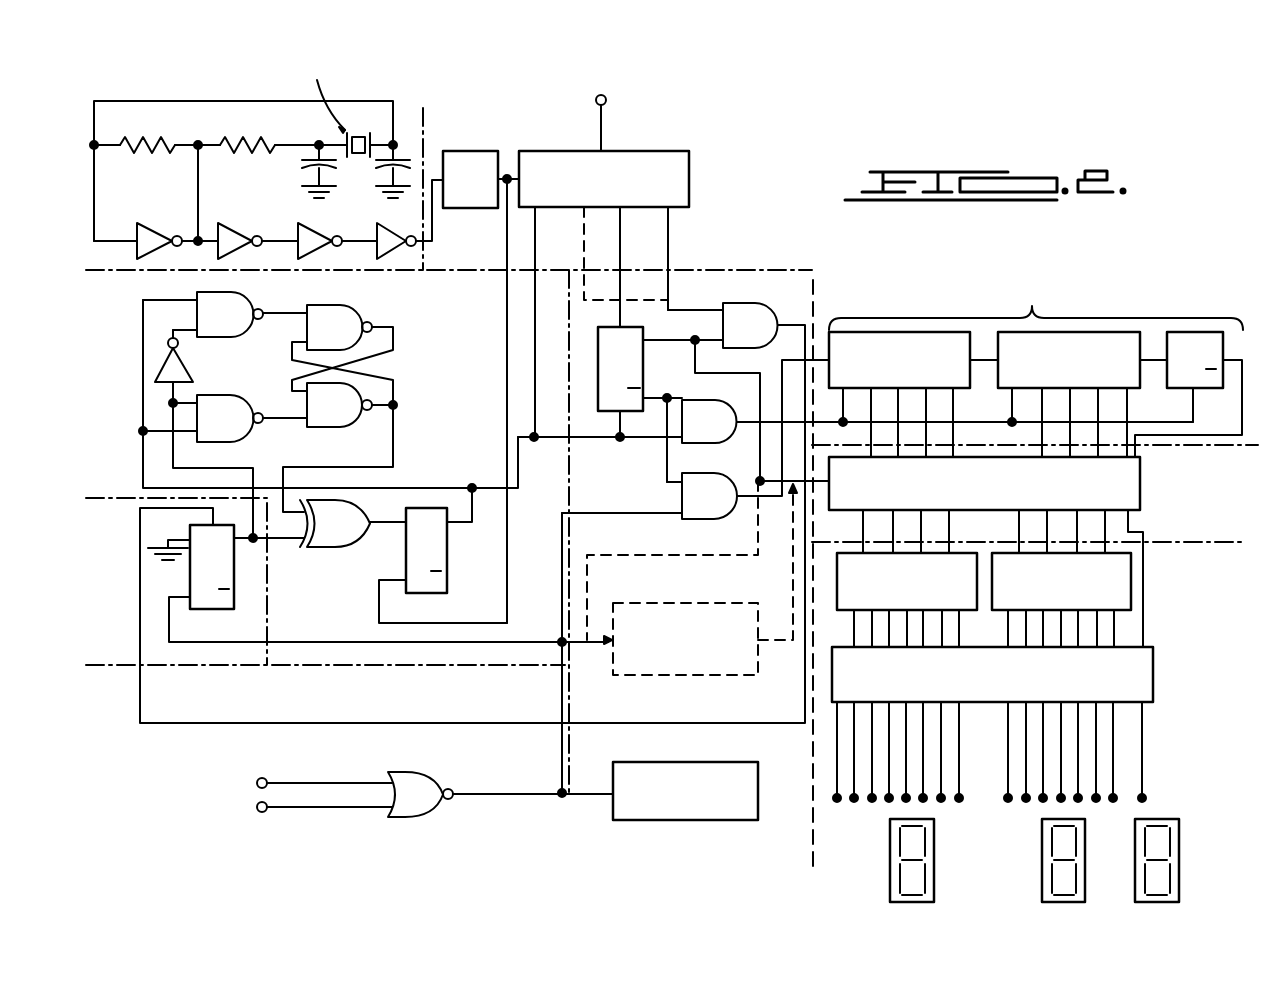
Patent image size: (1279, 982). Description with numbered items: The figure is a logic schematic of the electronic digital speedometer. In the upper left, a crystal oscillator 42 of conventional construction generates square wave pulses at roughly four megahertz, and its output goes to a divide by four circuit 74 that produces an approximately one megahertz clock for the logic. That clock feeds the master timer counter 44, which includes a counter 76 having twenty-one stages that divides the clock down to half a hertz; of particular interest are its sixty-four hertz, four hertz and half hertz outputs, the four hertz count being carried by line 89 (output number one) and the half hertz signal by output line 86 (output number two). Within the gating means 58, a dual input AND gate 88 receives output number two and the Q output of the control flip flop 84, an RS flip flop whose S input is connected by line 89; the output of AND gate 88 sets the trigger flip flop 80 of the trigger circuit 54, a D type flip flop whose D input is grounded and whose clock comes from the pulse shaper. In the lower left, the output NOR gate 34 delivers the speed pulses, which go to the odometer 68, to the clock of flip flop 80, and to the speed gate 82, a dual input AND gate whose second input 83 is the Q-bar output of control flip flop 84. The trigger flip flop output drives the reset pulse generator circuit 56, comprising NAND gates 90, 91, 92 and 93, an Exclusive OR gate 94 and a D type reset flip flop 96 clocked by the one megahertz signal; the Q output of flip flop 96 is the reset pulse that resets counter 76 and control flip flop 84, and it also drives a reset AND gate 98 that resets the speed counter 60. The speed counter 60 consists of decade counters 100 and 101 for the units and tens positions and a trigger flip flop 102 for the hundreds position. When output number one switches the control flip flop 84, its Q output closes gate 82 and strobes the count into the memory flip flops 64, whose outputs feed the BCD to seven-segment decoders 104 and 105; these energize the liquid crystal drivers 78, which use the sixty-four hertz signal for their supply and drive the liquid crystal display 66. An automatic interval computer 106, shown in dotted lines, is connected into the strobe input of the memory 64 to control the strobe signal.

The crystal oscillator 42 is at (210, 130).
The divide by four circuit 74 is at (503, 148).
The 21 stage counter 76 is at (672, 152).
The master timer counter 44 is at (755, 204).
The output No. 1 line 89 is at (620, 292).
The output line 86 is at (673, 285).
The gating means 58 is at (740, 295).
The AND gate 88 is at (762, 302).
The control flip flop 84 is at (645, 378).
The reset AND gate 98 is at (712, 445).
The second input 83 is at (665, 470).
The AND gate 82 is at (710, 521).
The NAND gate 91 is at (256, 298).
The NAND gate 92 is at (365, 305).
The NAND gate 90 is at (252, 443).
The NAND gate 93 is at (340, 430).
The reset pulse generator circuit 56 is at (430, 420).
The trigger circuit 54 is at (88, 531).
The trigger flip flop 80 is at (190, 568).
The Exclusive OR gate 94 is at (330, 548).
The reset flip flop 96 is at (447, 548).
The automatic interval computer 106 is at (690, 678).
The odometer 68 is at (712, 762).
The output NOR gate 34 is at (420, 818).
The decade counter 100 is at (910, 332).
The speed counter 60 is at (1036, 364).
The decade counter 101 is at (1095, 332).
The trigger flip flop 102 is at (1195, 332).
The memory flip flops 64 is at (1143, 480).
The BCD to seven-segment decoder 104 is at (958, 553).
The BCD to seven-segment decoder 105 is at (1133, 577).
The liquid crystal drivers 78 is at (1155, 657).
The liquid crystal display 66 is at (1181, 836).